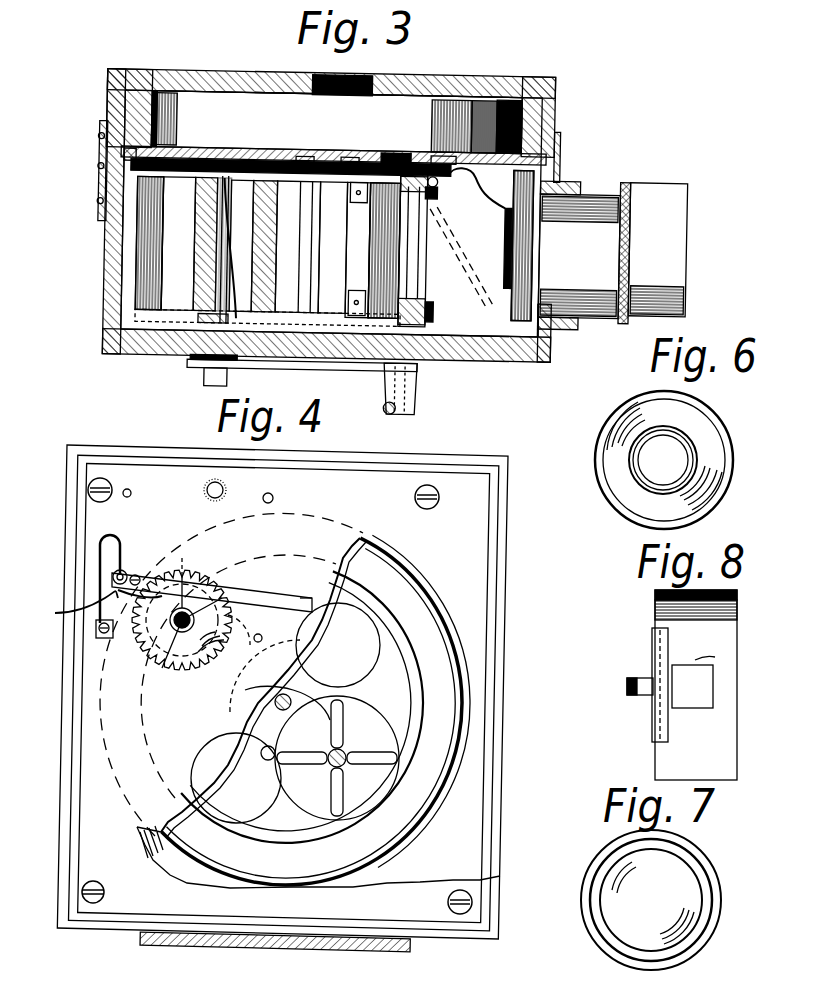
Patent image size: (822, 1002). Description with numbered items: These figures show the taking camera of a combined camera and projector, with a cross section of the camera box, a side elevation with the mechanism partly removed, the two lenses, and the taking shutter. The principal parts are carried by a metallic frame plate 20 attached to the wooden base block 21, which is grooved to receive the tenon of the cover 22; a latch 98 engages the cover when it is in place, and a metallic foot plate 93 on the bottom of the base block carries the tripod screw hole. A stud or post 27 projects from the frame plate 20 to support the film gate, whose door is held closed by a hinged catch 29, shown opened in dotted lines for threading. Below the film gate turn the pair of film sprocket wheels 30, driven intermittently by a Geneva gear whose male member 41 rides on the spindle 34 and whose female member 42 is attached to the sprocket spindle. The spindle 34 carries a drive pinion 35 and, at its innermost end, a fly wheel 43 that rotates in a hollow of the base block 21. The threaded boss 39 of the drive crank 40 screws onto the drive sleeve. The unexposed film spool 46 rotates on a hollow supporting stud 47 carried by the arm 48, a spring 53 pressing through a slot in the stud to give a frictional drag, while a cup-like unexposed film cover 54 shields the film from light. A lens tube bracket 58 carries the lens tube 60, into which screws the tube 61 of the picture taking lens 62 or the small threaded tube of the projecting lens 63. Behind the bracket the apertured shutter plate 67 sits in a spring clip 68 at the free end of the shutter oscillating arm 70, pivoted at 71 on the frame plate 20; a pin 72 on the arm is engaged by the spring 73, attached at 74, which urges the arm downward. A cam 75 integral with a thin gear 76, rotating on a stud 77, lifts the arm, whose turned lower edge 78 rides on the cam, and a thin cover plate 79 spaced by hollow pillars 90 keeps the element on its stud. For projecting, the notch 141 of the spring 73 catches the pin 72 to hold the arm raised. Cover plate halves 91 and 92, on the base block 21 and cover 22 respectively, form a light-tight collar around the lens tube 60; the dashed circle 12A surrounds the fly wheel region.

In FIG. 3, the frame plate 20 is at (460, 190).
In FIG. 4, the frame plate 20 is at (482, 493).
In FIG. 3, the base block 21 is at (553, 108).
In FIG. 4, the base block 21 is at (505, 534).
In FIG. 3, the cover 22 is at (530, 362).
In FIG. 3, the stud or post 27 is at (383, 265).
In FIG. 3, the hinged catch 29 is at (427, 320).
In FIG. 3, the film sprocket wheels 30 is at (384, 250).
In FIG. 3, the spindle 34 is at (328, 243).
In FIG. 3, the drive pinion 35 is at (299, 246).
In FIG. 3, the boss 39 is at (207, 372).
In FIG. 3, the drive crank 40 is at (327, 370).
In FIG. 3, the male member of Geneva gear 41 is at (277, 145).
In FIG. 4, the male member of Geneva gear 41 is at (268, 762).
In FIG. 3, the female member of Geneva gear 42 is at (405, 152).
In FIG. 4, the female member of Geneva gear 42 is at (370, 705).
In FIG. 3, the fly wheel 43 is at (450, 123).
In FIG. 4, the fly wheel 43 is at (415, 608).
In FIG. 3, the unexposed film spool 46 is at (263, 247).
In FIG. 3, the hollow supporting stud 47 is at (299, 246).
In FIG. 3, the arm 48 is at (287, 347).
In FIG. 3, the spring 53 is at (220, 237).
In FIG. 3, the unexposed film cover 54 is at (132, 275).
In FIG. 3, the lens tube bracket 58 is at (507, 332).
In FIG. 3, the lens tube 60 is at (553, 180).
In FIG. 3, the tube of the picture taking lens 61 is at (582, 180).
In FIG. 3, the picture taking lens 62 is at (647, 198).
In FIG. 6, the picture taking lens 62 is at (733, 470).
In FIG. 7, the projecting lens 63 is at (712, 852).
In FIG. 3, the shutter plate 67 is at (507, 280).
In FIG. 8, the shutter plate 67 is at (715, 685).
In FIG. 3, the spring clip 68 is at (503, 212).
In FIG. 8, the spring clip 68 is at (660, 640).
In FIG. 3, the shutter oscillating arm 70 is at (448, 173).
In FIG. 4, the shutter oscillating arm 70 is at (290, 592).
In FIG. 4, the pivot 71 is at (136, 603).
In FIG. 4, the stud or pin 72 is at (128, 572).
In FIG. 4, the spring 73 is at (118, 537).
In FIG. 4, the attachment point of spring 74 is at (102, 640).
In FIG. 4, the cam 75 is at (245, 632).
In FIG. 3, the gear 76 is at (223, 150).
In FIG. 4, the gear 76 is at (262, 600).
In FIG. 4, the stud 77 is at (178, 668).
In FIG. 4, the turned lower edge 78 is at (170, 570).
In FIG. 3, the cover plate 79 is at (163, 180).
In FIG. 3, the hollow pillars 90 is at (125, 178).
In FIG. 3, the cover plate half 91 is at (560, 140).
In FIG. 3, the cover plate half 92 is at (553, 343).
In FIG. 4, the foot plate 93 is at (301, 949).
In FIG. 3, the latch 98 is at (102, 145).
In FIG. 4, the notch 141 is at (68, 606).
In FIG. 4, the dashed circle 12A is at (231, 673).